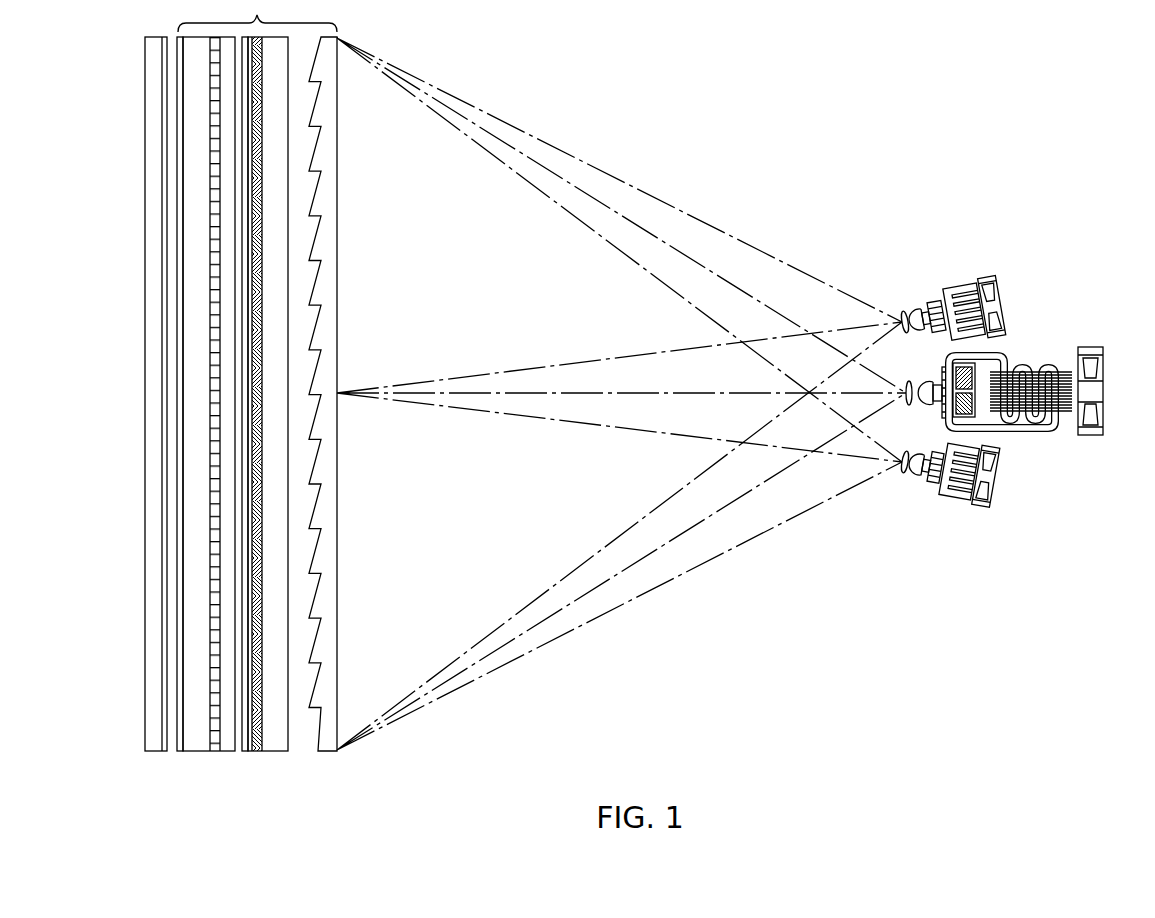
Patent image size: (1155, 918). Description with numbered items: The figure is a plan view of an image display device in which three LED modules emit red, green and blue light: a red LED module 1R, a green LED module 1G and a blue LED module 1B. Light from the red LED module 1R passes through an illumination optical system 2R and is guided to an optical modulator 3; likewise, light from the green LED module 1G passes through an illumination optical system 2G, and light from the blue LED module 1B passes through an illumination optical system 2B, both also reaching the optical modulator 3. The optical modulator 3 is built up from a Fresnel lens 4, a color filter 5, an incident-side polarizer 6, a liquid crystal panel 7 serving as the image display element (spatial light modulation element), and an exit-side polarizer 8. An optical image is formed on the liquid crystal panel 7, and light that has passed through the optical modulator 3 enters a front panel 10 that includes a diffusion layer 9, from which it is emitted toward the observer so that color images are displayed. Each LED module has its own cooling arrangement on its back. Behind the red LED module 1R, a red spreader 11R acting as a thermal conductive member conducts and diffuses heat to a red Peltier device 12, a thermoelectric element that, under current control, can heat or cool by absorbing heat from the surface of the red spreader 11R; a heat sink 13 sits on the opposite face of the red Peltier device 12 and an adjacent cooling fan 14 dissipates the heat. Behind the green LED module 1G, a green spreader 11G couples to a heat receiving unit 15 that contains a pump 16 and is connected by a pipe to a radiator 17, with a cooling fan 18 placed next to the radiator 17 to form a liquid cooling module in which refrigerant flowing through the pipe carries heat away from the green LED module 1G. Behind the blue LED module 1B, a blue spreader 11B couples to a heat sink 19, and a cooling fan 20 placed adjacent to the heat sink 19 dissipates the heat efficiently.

The red LED module 1R is at (918, 314).
The green LED module 1G is at (918, 406).
The blue LED module 1B is at (918, 478).
The illumination optical system 2R is at (900, 312).
The illumination optical system 2G is at (905, 385).
The illumination optical system 2B is at (903, 472).
The optical modulator 3 is at (257, 16).
The Fresnel lens 4 is at (328, 748).
The color filter 5 is at (257, 740).
The incident-side polarizer 6 is at (248, 740).
The liquid crystal panel 7 is at (212, 740).
The exit-side polarizer 8 is at (180, 740).
The diffusion layer 9 is at (166, 74).
The front panel 10 is at (152, 133).
The red spreader 11R is at (938, 303).
The green spreader 11G is at (943, 377).
The blue spreader 11B is at (937, 489).
The red Peltier device 12 is at (946, 294).
The heat sink 13 is at (978, 288).
The cooling fan 14 is at (1006, 292).
The heat receiving unit 15 is at (948, 418).
The pump 16 is at (977, 380).
The radiator 17 is at (1058, 368).
The cooling fan 18 is at (1104, 375).
The heat sink 19 is at (960, 493).
The cooling fan 20 is at (994, 484).